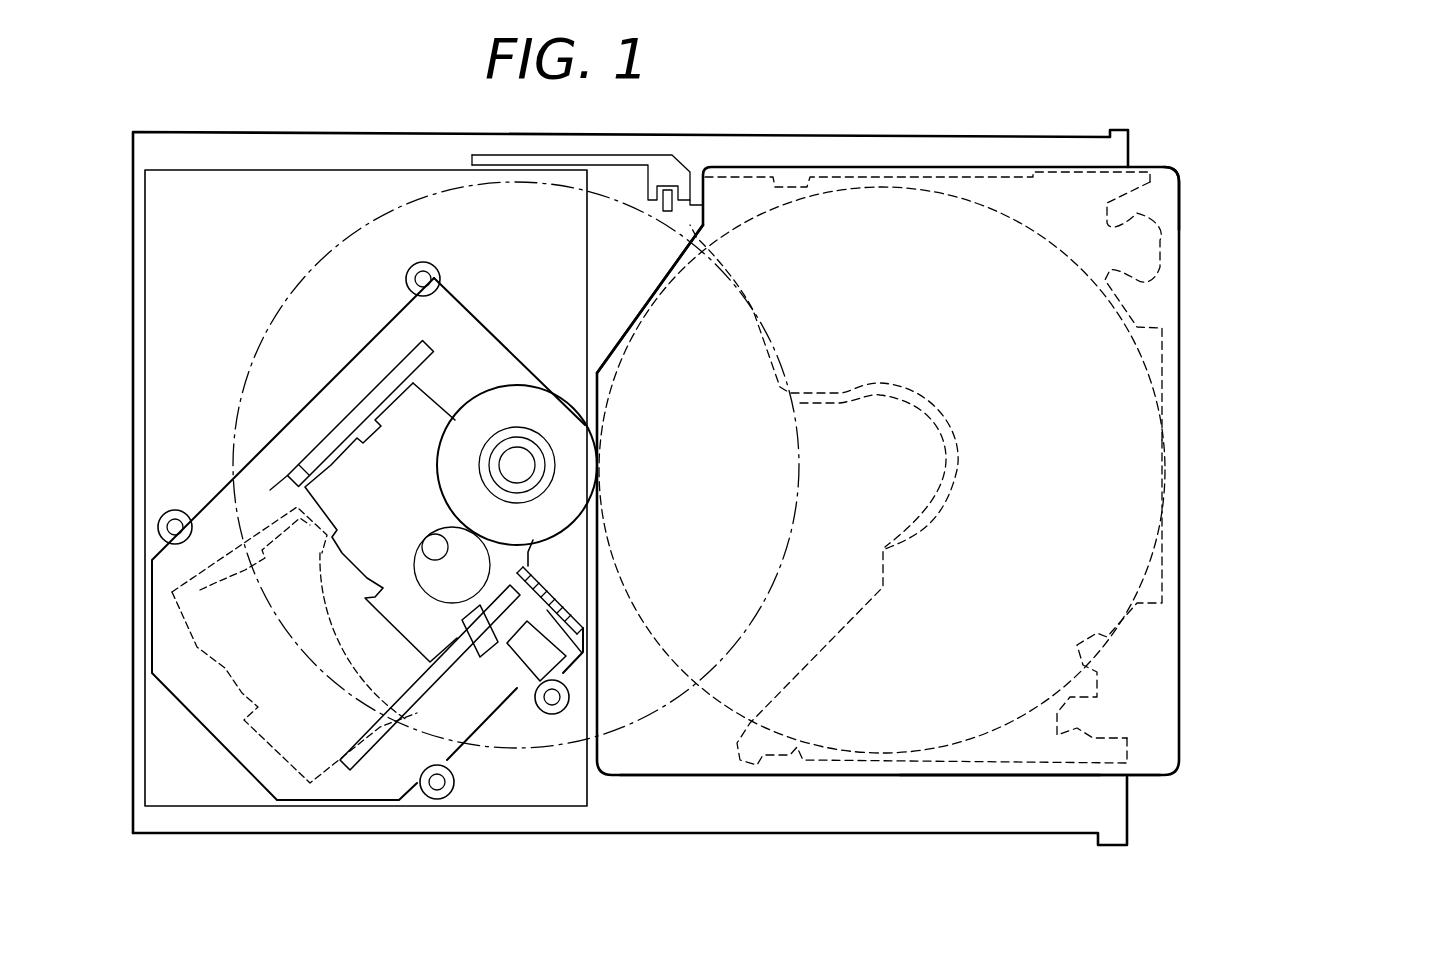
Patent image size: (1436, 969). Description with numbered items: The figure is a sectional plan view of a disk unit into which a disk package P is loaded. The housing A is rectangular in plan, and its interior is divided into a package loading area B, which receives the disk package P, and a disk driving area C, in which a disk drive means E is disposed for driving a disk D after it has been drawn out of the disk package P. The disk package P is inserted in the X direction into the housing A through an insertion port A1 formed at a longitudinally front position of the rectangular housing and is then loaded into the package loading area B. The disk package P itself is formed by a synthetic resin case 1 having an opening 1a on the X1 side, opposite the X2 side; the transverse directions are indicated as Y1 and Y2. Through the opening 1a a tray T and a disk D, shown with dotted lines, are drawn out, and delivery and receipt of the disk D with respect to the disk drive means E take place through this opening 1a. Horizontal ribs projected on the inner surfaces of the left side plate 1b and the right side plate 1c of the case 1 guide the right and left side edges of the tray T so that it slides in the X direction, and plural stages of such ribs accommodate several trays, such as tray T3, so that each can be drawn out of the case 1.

The synthetic resin case 1 is at (1180, 305).
The opening 1a is at (640, 297).
The left side plate 1b is at (985, 783).
The right side plate 1c is at (915, 167).
The housing A is at (688, 835).
The insertion port A1 is at (1190, 210).
The package loading area B is at (822, 813).
The disk driving area C is at (357, 822).
The disk D is at (288, 295).
The disk drive means E is at (292, 405).
The disk package P is at (1170, 663).
The tray T is at (1160, 350).
The tray T3 is at (1160, 235).
The X1 direction X1 is at (1304, 510).
The X2 direction X2 is at (1304, 510).
The Y1 direction Y1 is at (1304, 510).
The Y2 direction Y2 is at (1304, 510).